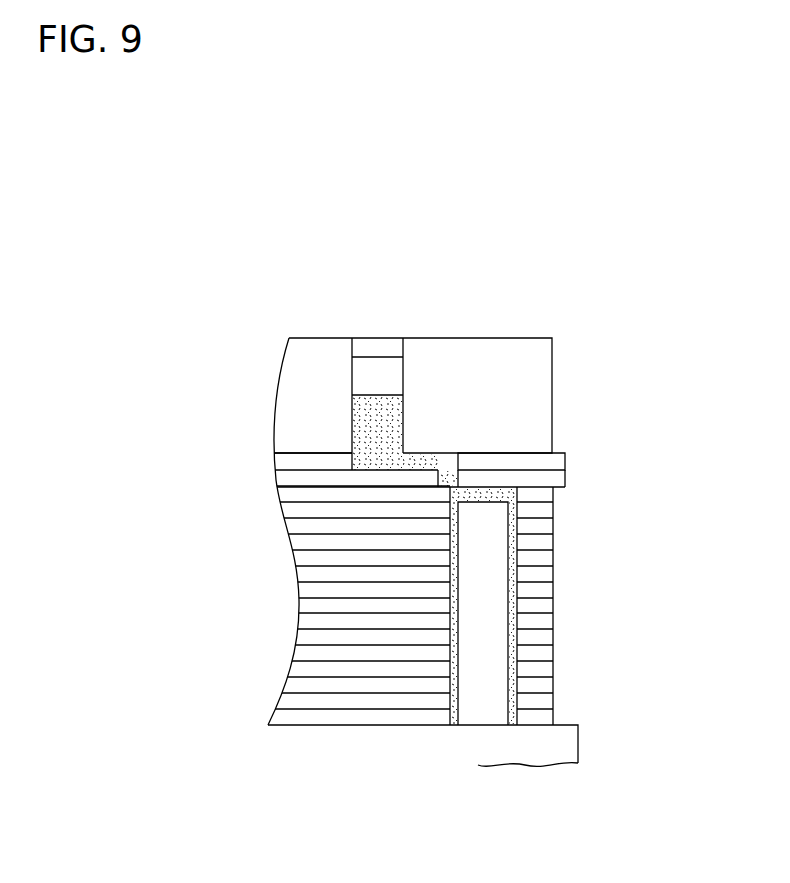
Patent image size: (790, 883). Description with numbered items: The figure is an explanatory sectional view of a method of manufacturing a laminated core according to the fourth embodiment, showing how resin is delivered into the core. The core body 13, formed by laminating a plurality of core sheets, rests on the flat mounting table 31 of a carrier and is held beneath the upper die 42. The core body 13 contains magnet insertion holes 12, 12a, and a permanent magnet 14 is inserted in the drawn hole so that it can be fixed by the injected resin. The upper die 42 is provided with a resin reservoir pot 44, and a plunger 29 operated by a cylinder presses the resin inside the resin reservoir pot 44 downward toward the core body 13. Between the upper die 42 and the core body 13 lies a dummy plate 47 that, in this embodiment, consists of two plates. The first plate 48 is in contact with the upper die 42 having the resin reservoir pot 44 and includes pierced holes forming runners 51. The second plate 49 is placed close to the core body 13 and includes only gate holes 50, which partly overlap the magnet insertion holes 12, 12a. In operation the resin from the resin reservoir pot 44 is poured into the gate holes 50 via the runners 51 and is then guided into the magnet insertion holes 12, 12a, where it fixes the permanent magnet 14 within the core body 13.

The core body 13 is at (561, 605).
The upper die 42 is at (527, 378).
The resin reservoir pot 44 is at (353, 428).
The plunger 29 is at (378, 377).
The runner 51 is at (421, 455).
The dummy plate 47 is at (495, 458).
The first plate 48 is at (568, 460).
The second plate 49 is at (568, 478).
The gate hole 50 is at (455, 470).
The magnet insertion hole 12 is at (474, 679).
The magnet insertion hole 12a is at (517, 668).
The permanent magnet 14 is at (478, 652).
The mounting table 31 is at (555, 743).